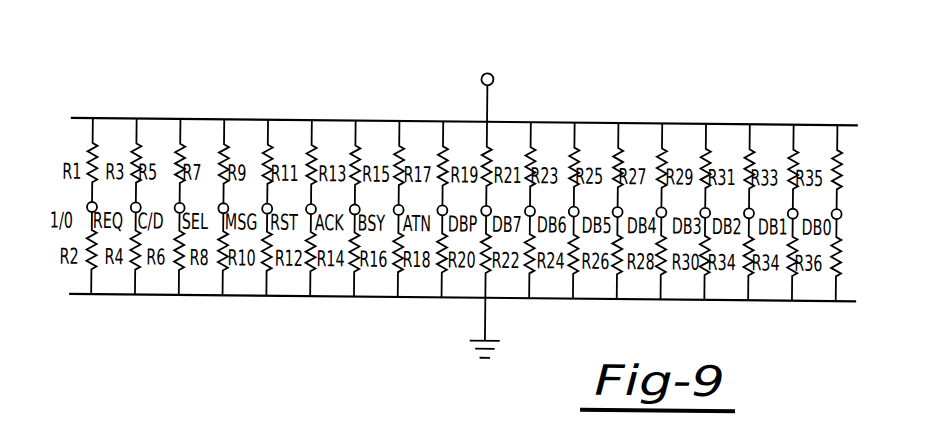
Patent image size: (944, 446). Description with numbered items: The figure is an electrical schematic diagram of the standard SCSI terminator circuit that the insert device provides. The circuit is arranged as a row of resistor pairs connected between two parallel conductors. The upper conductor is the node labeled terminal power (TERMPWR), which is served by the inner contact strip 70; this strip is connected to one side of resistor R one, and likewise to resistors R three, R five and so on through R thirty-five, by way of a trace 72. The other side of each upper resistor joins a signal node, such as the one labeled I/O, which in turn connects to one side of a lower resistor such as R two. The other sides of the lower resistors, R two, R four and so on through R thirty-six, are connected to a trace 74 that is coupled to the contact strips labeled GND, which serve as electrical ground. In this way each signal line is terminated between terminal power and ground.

The inner contact strip 70 is at (486, 99).
The trace 72 is at (591, 118).
The trace 74 is at (557, 294).